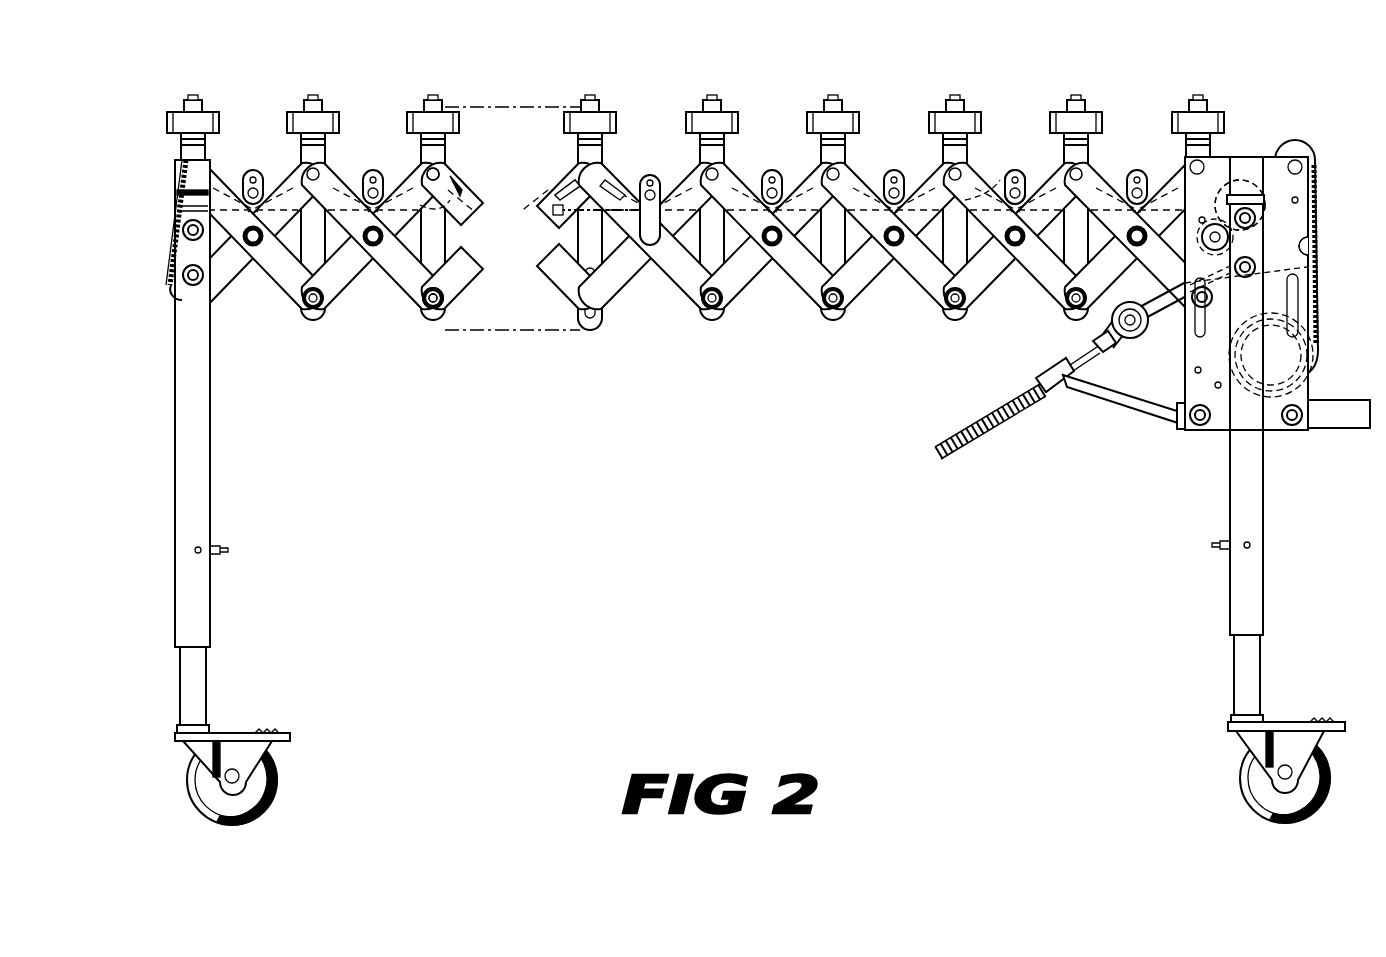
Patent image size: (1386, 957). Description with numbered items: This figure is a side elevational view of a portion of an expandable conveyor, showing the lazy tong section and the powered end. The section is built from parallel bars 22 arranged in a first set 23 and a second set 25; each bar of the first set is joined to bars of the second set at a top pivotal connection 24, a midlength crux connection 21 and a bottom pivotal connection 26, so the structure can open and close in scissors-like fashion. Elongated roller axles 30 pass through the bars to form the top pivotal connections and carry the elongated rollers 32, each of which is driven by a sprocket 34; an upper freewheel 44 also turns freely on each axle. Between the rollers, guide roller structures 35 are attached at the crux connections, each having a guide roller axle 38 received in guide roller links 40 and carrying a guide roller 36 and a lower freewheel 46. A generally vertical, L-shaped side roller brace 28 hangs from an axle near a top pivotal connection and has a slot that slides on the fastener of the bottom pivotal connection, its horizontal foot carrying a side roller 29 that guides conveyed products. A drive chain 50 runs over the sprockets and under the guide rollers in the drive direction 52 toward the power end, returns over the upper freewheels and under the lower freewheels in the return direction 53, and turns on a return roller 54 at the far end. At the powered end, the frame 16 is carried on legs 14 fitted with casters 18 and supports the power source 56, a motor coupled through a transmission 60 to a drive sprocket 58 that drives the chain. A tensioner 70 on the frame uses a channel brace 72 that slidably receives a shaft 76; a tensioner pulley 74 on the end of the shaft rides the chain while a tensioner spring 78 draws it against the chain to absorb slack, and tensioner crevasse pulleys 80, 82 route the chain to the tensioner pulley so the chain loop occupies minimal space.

The legs 14 is at (200, 440).
The frame 16 is at (1283, 432).
The casters 18 is at (280, 770).
The crux connection 21 is at (362, 252).
The bars 22 is at (276, 160).
The first set 23 is at (340, 280).
The top pivotal connection 24 is at (718, 172).
The second set 25 is at (405, 255).
The bottom pivotal connection 26 is at (442, 300).
The side roller brace 28 is at (322, 150).
The side roller 29 is at (340, 140).
The roller axle 30 is at (440, 172).
The elongated roller 32 is at (462, 190).
The sprocket 34 is at (440, 218).
The guide roller structure 35 is at (642, 244).
The guide roller 36 is at (640, 200).
The guide roller axle 38 is at (600, 226).
The guide roller links 40 is at (640, 240).
The upper freewheel 44 is at (985, 160).
The lower freewheel 46 is at (1000, 185).
The drive chain 50 is at (170, 245).
The drive direction 52 is at (925, 15).
The return direction 53 is at (548, 57).
The return roller 54 is at (168, 292).
The power source 56 is at (1312, 322).
The drive sprocket 58 is at (1312, 345).
The transmission 60 is at (1310, 372).
The tensioner 70 is at (1078, 385).
The brace 72 is at (1125, 422).
The tensioner pulley 74 is at (1110, 325).
The shaft 76 is at (1090, 360).
The tensioner spring 78 is at (985, 425).
The tensioner crevasse pulley 80 is at (1225, 185).
The tensioner crevasse pulley 82 is at (1310, 262).